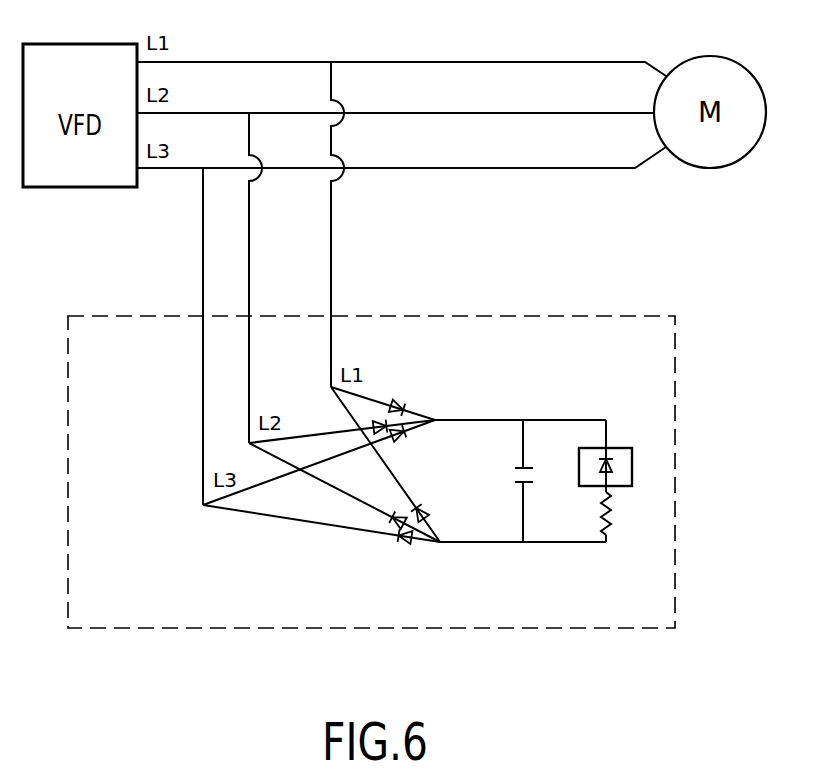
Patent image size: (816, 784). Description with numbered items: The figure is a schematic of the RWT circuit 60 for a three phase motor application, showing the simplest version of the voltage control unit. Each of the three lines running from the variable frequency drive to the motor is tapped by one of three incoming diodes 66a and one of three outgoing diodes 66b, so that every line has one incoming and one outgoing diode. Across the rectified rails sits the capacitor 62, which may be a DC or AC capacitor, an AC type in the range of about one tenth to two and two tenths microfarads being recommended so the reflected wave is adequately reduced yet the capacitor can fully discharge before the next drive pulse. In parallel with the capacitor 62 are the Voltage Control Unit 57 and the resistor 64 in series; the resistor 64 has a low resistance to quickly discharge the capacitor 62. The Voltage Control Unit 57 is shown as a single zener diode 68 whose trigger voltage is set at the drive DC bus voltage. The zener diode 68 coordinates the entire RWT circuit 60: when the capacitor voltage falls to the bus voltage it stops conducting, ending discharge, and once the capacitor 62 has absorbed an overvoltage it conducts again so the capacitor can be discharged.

The RWT circuit 60 is at (677, 352).
The capacitor 62 is at (527, 444).
The resistor 64 is at (608, 505).
The Voltage Control Unit 57 is at (632, 478).
The zener diode 68 is at (609, 463).
The incoming diodes 66a is at (401, 410).
The outgoing diodes 66b is at (406, 540).